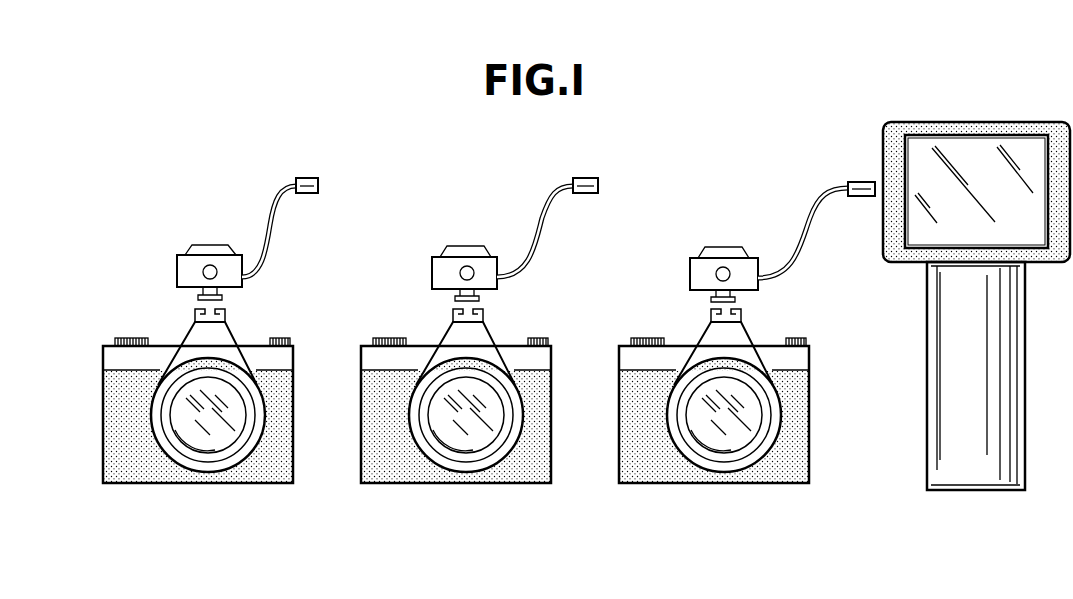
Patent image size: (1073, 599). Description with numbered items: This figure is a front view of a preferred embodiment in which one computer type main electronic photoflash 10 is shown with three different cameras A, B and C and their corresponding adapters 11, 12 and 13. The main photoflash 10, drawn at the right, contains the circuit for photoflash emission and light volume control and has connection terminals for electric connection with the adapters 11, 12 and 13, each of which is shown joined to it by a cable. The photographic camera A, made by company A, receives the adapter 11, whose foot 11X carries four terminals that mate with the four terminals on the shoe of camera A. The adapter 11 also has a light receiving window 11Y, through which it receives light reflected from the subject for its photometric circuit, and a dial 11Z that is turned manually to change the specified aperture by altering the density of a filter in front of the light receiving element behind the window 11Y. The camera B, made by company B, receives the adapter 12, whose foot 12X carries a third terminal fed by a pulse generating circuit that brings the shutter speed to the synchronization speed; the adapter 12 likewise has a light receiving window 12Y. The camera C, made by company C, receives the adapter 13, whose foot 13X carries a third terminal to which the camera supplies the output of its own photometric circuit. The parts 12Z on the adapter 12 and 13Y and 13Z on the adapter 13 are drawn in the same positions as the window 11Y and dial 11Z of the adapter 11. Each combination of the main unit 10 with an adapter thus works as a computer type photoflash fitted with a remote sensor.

The main electronic photoflash 10 is at (959, 118).
The adapter 11 is at (183, 262).
The foot 11X is at (213, 299).
The light receiving window 11Y is at (205, 275).
The dial 11Z is at (213, 250).
The adapter 12 is at (440, 264).
The mounting foot of unit 12 12X is at (470, 299).
The light receiving window 12Y is at (462, 276).
The top housing of unit 12 12Z is at (470, 253).
The adapter 13 is at (698, 268).
The mounting foot of unit 13 13X is at (728, 301).
The lens/sensor of unit 13 13Y is at (718, 277).
The top housing of unit 13 13Z is at (728, 255).
The photographic camera A is at (238, 487).
The camera B is at (490, 487).
The camera C is at (713, 488).